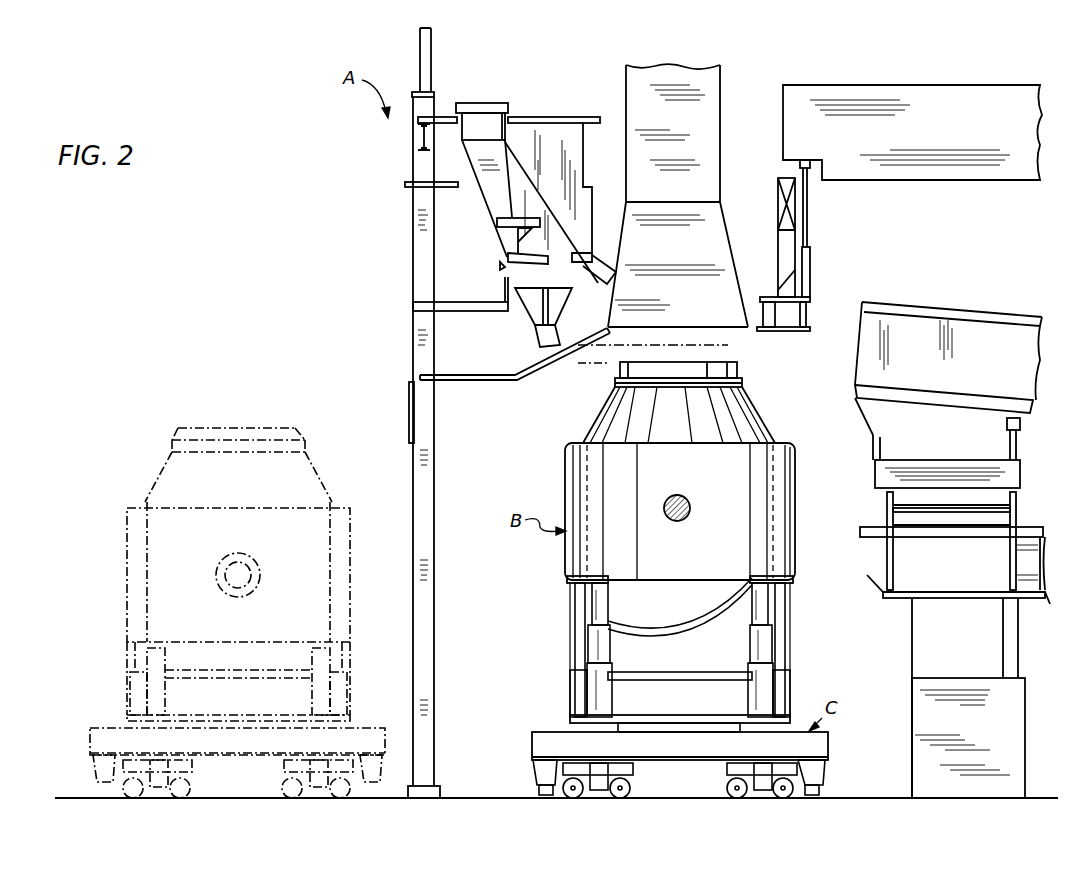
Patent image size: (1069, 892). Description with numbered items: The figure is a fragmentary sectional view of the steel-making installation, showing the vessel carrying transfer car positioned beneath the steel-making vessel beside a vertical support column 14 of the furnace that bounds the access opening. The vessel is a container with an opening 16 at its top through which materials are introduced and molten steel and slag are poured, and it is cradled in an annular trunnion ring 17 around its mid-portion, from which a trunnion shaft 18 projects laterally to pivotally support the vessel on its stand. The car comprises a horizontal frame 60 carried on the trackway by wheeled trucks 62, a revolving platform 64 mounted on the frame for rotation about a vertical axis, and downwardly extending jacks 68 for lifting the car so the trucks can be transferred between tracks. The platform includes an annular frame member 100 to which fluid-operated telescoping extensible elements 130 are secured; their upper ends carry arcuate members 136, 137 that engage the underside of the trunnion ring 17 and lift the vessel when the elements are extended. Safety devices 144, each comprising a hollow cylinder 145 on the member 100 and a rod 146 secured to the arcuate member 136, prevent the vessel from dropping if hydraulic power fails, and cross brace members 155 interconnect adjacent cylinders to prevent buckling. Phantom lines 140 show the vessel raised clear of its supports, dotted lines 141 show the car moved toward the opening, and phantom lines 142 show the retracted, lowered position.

The vertical support column 14 is at (429, 464).
The opening 16 is at (740, 363).
The annular trunnion ring 17 is at (693, 467).
The trunnion shaft 18 is at (690, 512).
The frame 60 is at (830, 751).
The wheeled trucks 62 is at (600, 792).
The revolving platform 64 is at (562, 718).
The jacks 68 is at (535, 776).
The annular frame member 100 is at (628, 715).
The extensible elements 130 is at (614, 672).
The arcuate member 136 is at (567, 578).
The arcuate member 137 is at (793, 579).
The phantom lines 140 is at (736, 345).
The dotted lines 141 is at (578, 364).
The phantom lines 142 is at (148, 492).
The safety devices 144 is at (568, 657).
The hollow cylinder 145 is at (570, 690).
The rod 146 is at (575, 615).
The cross brace members 155 is at (692, 676).